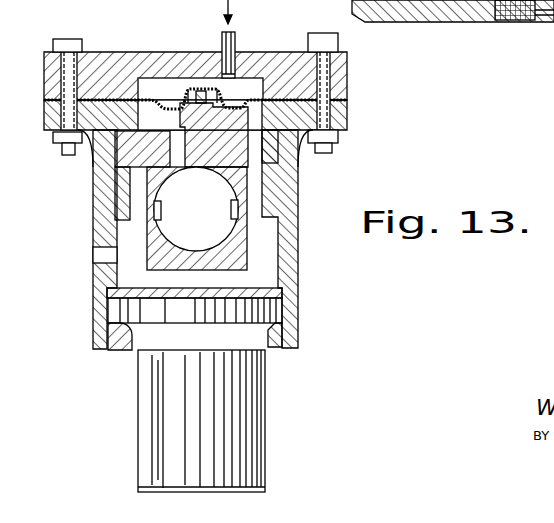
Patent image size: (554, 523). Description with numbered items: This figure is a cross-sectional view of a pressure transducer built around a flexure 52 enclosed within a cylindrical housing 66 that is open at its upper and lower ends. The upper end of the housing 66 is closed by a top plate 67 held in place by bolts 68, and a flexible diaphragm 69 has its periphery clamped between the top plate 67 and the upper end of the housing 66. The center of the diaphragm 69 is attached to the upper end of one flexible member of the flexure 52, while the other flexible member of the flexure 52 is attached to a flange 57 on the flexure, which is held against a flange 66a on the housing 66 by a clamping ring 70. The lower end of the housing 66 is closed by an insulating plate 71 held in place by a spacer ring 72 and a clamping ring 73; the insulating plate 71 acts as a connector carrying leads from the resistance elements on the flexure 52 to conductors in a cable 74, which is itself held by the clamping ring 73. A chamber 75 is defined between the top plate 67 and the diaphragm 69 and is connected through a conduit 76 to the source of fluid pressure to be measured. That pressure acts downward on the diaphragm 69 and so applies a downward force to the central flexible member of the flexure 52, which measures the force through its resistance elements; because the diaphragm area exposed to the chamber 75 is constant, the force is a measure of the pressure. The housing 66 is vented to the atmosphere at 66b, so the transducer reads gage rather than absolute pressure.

The flexure 52 is at (245, 237).
The flange 57 is at (128, 149).
The housing 66 is at (93, 210).
The flange 66a is at (280, 152).
The vent 66b is at (94, 256).
The top plate 67 is at (117, 52).
The bolts 68 is at (67, 38).
The flexible diaphragm 69 is at (251, 77).
The clamping ring 70 is at (121, 192).
The insulating plate 71 is at (297, 293).
The spacer ring 72 is at (284, 313).
The clamping ring 73 is at (280, 350).
The cable 74 is at (250, 408).
The chamber 75 is at (162, 87).
The conduit 76 is at (233, 38).